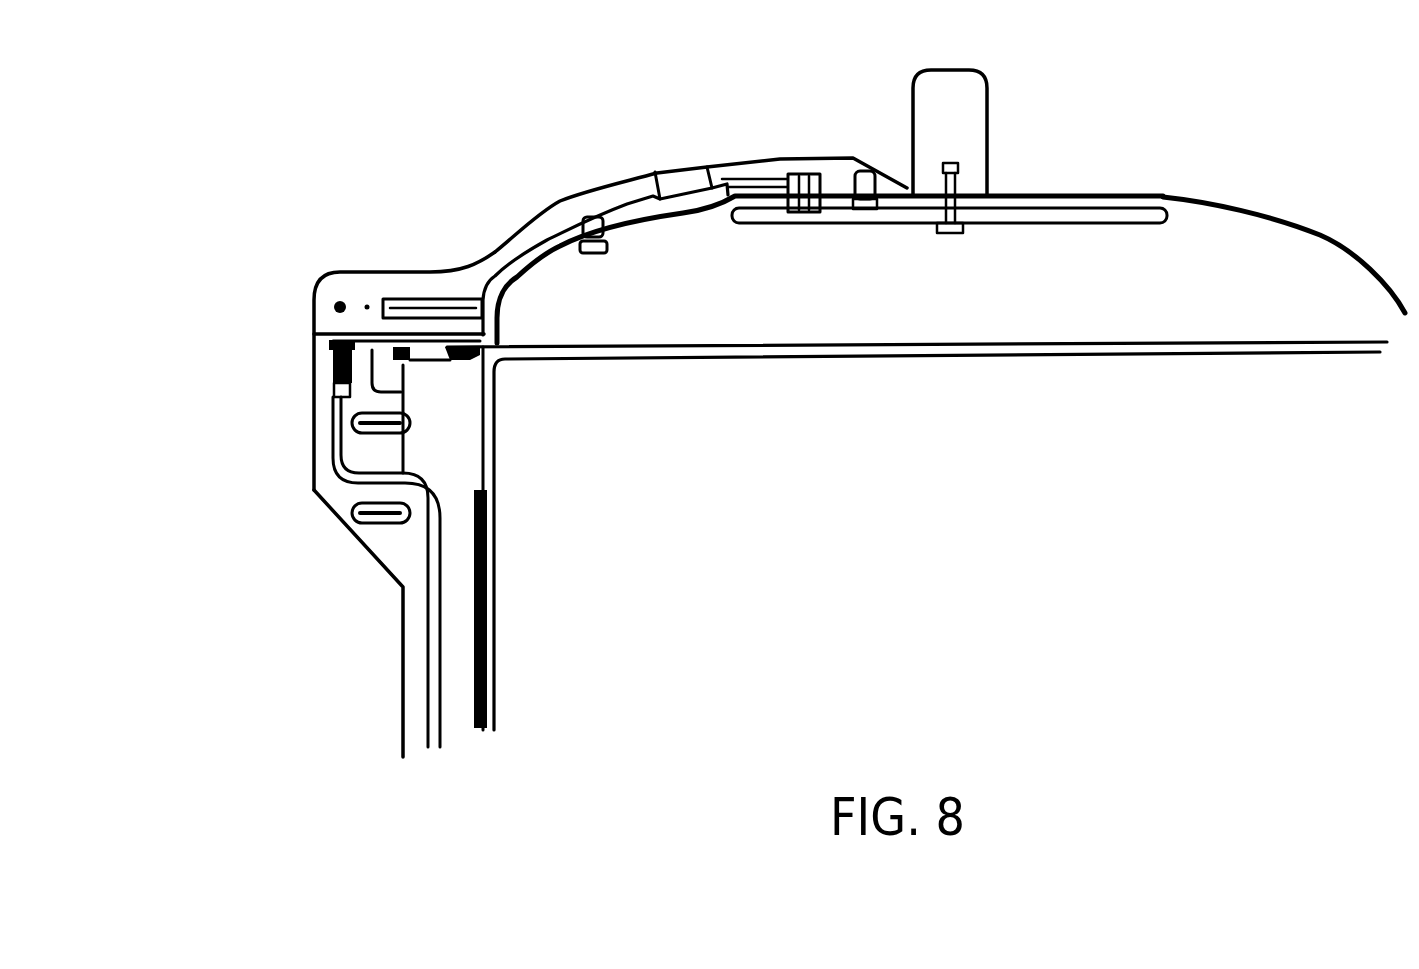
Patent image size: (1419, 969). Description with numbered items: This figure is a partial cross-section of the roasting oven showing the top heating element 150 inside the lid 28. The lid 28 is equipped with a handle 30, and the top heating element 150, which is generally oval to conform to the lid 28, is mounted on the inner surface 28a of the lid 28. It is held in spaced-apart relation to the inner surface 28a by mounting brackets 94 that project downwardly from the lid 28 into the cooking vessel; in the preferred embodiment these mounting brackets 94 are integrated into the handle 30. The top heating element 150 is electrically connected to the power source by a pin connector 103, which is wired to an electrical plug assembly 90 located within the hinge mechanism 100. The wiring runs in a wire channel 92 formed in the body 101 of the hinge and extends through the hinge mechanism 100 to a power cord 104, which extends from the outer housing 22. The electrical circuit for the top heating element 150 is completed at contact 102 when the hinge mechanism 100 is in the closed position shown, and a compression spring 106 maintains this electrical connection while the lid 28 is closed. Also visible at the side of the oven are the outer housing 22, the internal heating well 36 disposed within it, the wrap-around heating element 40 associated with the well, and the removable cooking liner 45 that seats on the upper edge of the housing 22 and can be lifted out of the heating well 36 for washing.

The hinge mechanism 100 is at (338, 238).
The contact 102 is at (312, 327).
The electrical plug assembly 90 is at (457, 330).
The compression spring 106 is at (320, 365).
The heating well 36 is at (497, 392).
The outer housing 22 is at (402, 682).
The wrap-around heating element 40 is at (474, 537).
The power cord 104 is at (440, 642).
The removable cooking liner 45 is at (497, 452).
The top heating element 150 is at (1091, 258).
The wire channel 92 is at (545, 233).
The body of the hinge 101 is at (623, 181).
The inner surface of the lid 28a is at (683, 213).
The lid 28 is at (1200, 205).
The mounting brackets 94 is at (960, 226).
The pin connector 103 is at (807, 212).
The handle 30 is at (925, 108).